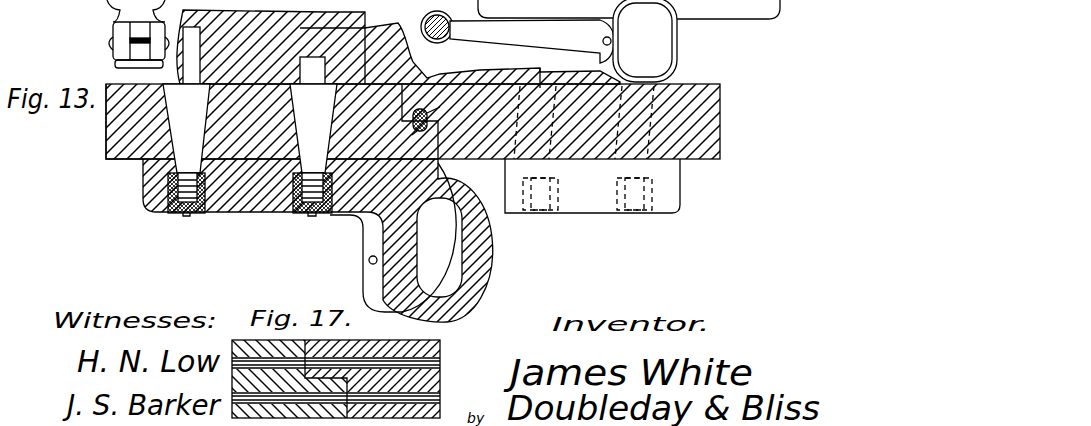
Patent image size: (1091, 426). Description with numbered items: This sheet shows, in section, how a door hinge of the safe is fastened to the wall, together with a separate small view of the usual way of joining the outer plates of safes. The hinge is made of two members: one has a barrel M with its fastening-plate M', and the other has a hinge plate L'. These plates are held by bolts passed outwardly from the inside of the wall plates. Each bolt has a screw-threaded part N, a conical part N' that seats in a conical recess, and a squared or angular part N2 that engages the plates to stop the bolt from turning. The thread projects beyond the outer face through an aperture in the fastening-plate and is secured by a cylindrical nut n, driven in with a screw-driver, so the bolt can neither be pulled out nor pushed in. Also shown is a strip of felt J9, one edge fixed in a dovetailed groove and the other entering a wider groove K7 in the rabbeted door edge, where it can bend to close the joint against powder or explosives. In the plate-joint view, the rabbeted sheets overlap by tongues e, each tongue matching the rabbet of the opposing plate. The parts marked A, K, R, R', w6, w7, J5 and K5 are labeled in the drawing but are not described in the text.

In FIG. 13, the frame / receiver block A is at (718, 120).
In FIG. 13, the block K is at (125, 148).
In FIG. 13, the squared bolt part N2 is at (191, 55).
In FIG. 13, the fastening-plate M' is at (318, 240).
In FIG. 13, the conical bolt part N' is at (186, 128).
In FIG. 13, the screw-threaded bolt part N is at (179, 204).
In FIG. 13, the cylindrical nut n is at (305, 214).
In FIG. 13, the hinge plate L' is at (629, 121).
In FIG. 13, the pivot of lever R' is at (437, 39).
In FIG. 13, the lever R is at (532, 41).
In FIG. 13, the barrel M is at (603, 41).
In FIG. 13, the thumb screw w6 is at (117, 32).
In FIG. 13, the thumb screw ears w7 is at (112, 45).
In FIG. 13, the groove K7 is at (402, 111).
In FIG. 13, the strip of felt J9 is at (417, 112).
In FIG. 13, the bolt part J5 is at (439, 106).
In FIG. 13, the pocket part K5 is at (408, 141).
In FIG. 17, the overlapping tongue e is at (336, 375).